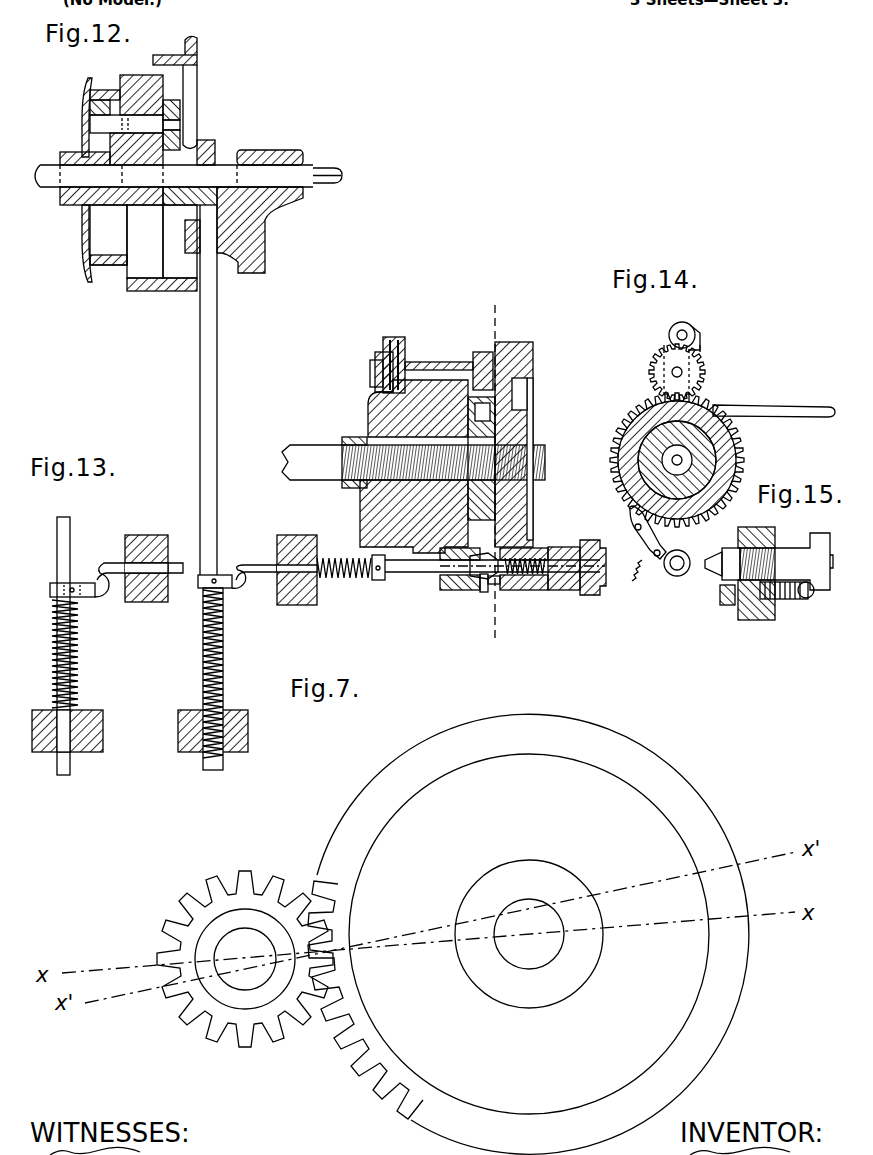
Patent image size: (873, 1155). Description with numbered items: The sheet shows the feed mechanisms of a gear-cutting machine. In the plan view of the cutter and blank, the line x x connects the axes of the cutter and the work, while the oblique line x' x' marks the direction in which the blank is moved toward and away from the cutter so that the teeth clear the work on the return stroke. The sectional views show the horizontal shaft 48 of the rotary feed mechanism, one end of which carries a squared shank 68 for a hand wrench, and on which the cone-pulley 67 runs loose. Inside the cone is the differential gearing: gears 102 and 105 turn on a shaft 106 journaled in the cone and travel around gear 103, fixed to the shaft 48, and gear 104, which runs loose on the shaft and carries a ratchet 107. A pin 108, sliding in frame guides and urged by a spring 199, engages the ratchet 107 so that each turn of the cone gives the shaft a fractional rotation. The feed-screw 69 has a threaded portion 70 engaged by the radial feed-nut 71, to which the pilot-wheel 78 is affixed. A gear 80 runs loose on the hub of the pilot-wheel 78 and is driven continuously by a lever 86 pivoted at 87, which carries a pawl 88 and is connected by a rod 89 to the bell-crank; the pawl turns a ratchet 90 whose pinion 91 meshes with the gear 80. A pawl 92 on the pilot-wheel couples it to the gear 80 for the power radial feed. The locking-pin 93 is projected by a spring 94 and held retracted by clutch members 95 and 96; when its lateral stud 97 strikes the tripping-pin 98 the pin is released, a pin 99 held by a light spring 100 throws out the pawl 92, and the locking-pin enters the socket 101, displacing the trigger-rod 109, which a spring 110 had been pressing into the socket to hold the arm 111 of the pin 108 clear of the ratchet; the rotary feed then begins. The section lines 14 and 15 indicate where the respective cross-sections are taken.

In FIG. 12, the horizontal shaft 48 is at (222, 167).
In FIG. 12, the cone-pulley 67 is at (198, 78).
In FIG. 12, the squared shank 68 is at (342, 173).
In FIG. 13, the feed-screw 69 is at (300, 450).
In FIG. 13, the threaded portion 70 is at (365, 462).
In FIG. 13, the radial feed-nut 71 is at (392, 510).
In FIG. 13, the pilot-wheel 78 is at (533, 350).
In FIG. 13, the gear 80 is at (515, 410).
In FIG. 14, the gear 80 is at (612, 440).
In FIG. 13, the lever 86 is at (383, 342).
In FIG. 14, the lever 86 is at (665, 344).
In FIG. 13, the pivot 87 is at (376, 372).
In FIG. 14, the pivot 87 is at (683, 371).
In FIG. 14, the pawl 88 is at (700, 338).
In FIG. 13, the rod 89 is at (375, 412).
In FIG. 14, the rod 89 is at (775, 418).
In FIG. 13, the ratchet 90 is at (408, 357).
In FIG. 14, the ratchet 90 is at (700, 380).
In FIG. 13, the pinion 91 is at (478, 352).
In FIG. 14, the pawl 92 is at (630, 510).
In FIG. 15, the pawl 92 is at (727, 605).
In FIG. 13, the locking-pin 93 is at (480, 555).
In FIG. 15, the locking-pin 93 is at (718, 563).
In FIG. 13, the spring 94 is at (535, 550).
In FIG. 13, the clutch member 95 is at (565, 548).
In FIG. 13, the clutch member 96 is at (588, 592).
In FIG. 13, the lateral stud 97 is at (495, 584).
In FIG. 13, the tripping-pin 98 is at (483, 592).
In FIG. 15, the pin 99 is at (757, 621).
In FIG. 15, the light spring 100 is at (792, 600).
In FIG. 13, the socket or bushing 101 is at (450, 590).
In FIG. 12, the gear 102 is at (85, 112).
In FIG. 12, the gear 103 is at (100, 207).
In FIG. 12, the gear 104 is at (177, 203).
In FIG. 12, the gear 105 is at (180, 112).
In FIG. 12, the shaft 106 is at (115, 123).
In FIG. 12, the ratchet 107 is at (200, 147).
In FIG. 12, the pin 108 is at (218, 340).
In FIG. 13, the trigger-rod 109 is at (112, 562).
In FIG. 13, the spring 110 is at (335, 565).
In FIG. 13, the arm 111 is at (88, 590).
In FIG. 13, the spring 199 is at (78, 660).
In FIG. 13, the section line 14 14 is at (500, 465).
In FIG. 13, the section line 15 15 is at (536, 557).